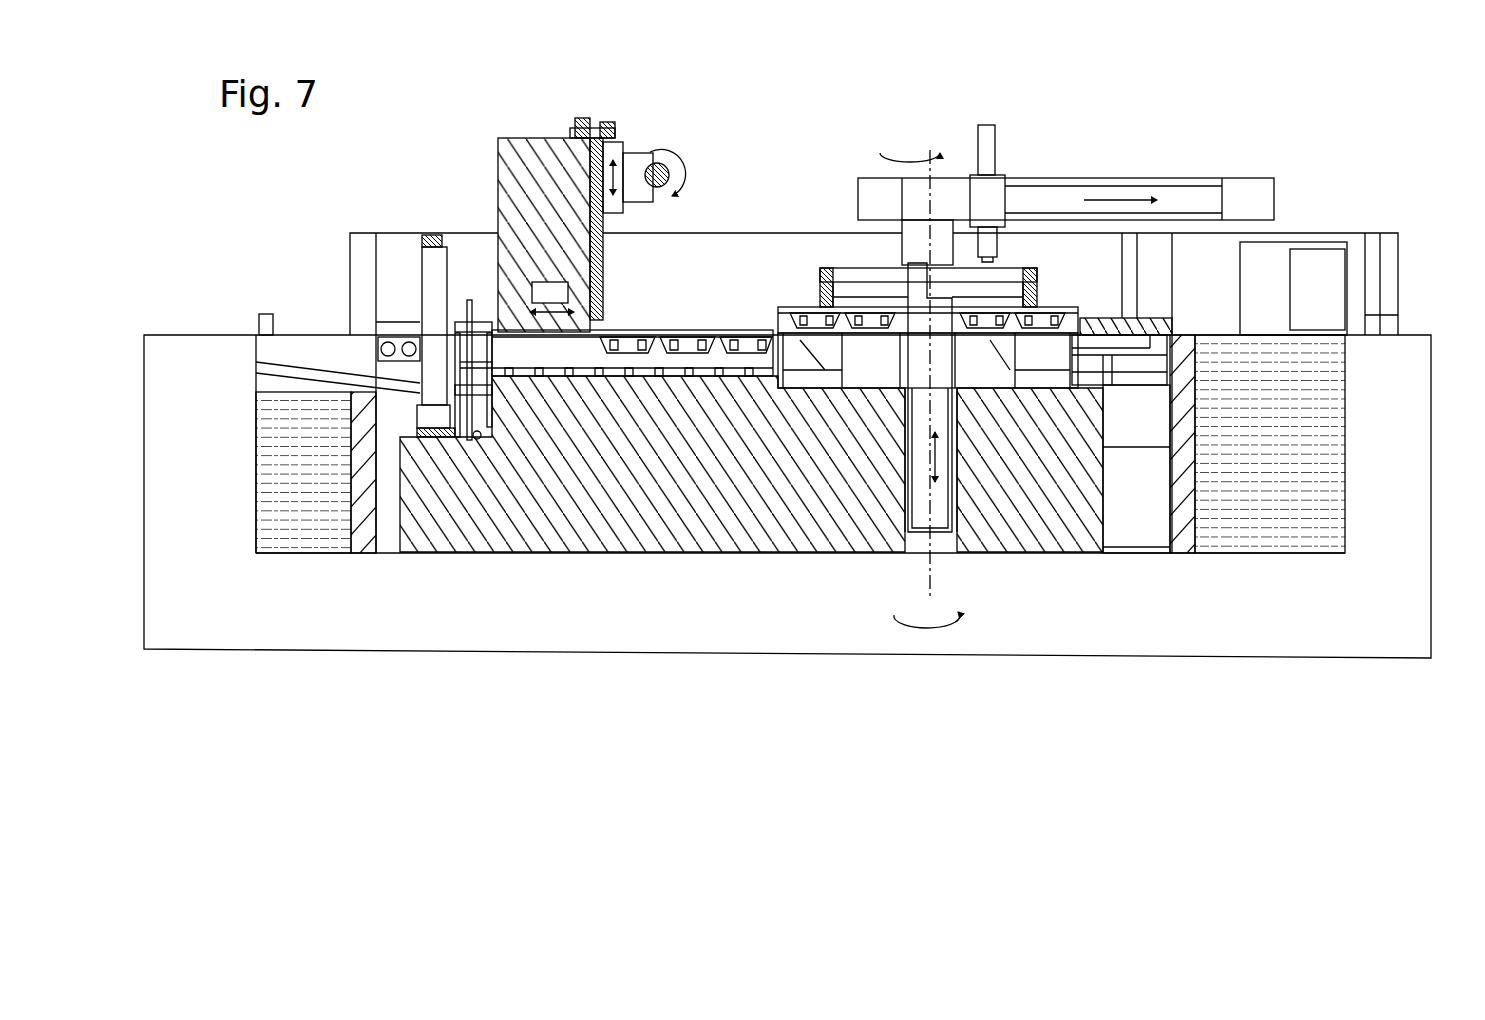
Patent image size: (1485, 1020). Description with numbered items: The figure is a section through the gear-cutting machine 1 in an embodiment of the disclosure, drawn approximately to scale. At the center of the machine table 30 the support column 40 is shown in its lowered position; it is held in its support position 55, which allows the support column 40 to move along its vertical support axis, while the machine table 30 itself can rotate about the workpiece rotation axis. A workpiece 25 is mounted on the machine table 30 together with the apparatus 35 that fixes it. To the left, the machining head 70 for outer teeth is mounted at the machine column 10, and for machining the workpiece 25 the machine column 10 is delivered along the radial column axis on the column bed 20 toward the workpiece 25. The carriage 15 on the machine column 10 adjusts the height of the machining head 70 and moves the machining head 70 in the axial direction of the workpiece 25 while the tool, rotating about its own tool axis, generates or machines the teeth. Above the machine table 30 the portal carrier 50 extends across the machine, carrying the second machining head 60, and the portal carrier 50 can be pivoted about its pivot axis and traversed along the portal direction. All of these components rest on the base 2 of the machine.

The gear-cutting machine 1 is at (1200, 102).
The machine bed 2 is at (490, 503).
The machine column 10 is at (530, 170).
The carriage 15 is at (617, 142).
The column bed 20 is at (510, 352).
The workpiece 25 is at (822, 304).
The machine table 30 is at (856, 320).
The apparatus 35 is at (826, 290).
The support column 40 is at (917, 493).
The portal carrier 50 is at (1250, 190).
The support position 55 is at (900, 430).
The second machining head 60 is at (990, 190).
The machining head for outer teeth 70 is at (636, 153).